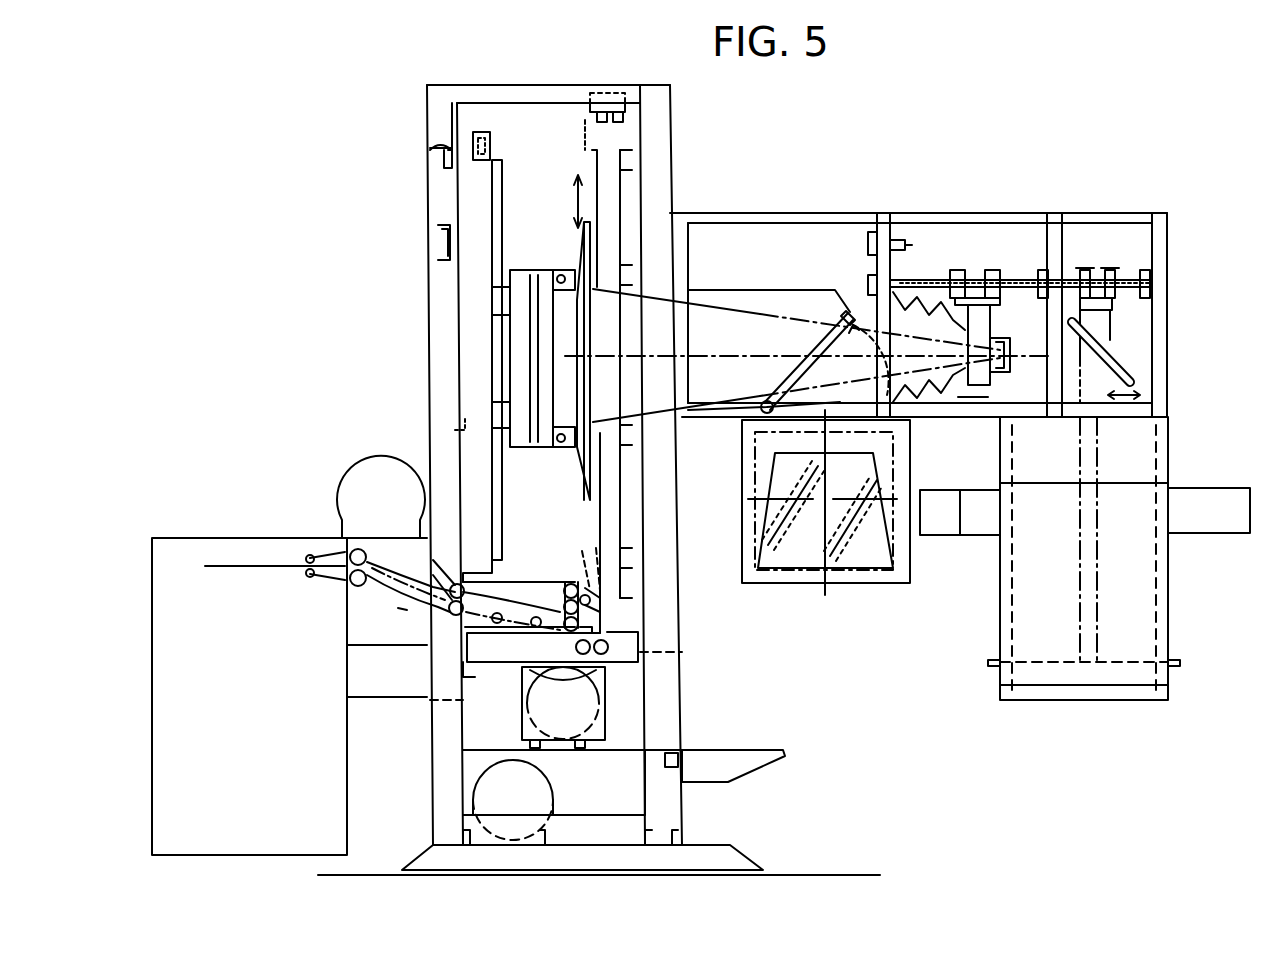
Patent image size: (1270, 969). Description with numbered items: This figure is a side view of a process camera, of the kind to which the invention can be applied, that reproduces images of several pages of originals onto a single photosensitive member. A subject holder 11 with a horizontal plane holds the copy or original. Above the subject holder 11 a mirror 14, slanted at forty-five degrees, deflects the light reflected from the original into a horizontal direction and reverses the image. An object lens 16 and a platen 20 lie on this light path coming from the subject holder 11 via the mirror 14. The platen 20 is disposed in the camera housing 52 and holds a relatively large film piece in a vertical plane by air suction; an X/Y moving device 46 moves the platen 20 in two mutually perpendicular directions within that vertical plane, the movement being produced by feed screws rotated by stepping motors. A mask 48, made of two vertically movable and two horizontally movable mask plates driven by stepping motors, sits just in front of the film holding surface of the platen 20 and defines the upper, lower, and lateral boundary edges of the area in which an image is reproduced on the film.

The subject holder 11 is at (1133, 660).
The mirror 14 is at (1118, 355).
The object lens 16 is at (1000, 346).
The platen 20 is at (593, 338).
The X/Y moving device 46 is at (563, 246).
The mask 48 is at (595, 168).
The camera housing 52 is at (433, 318).